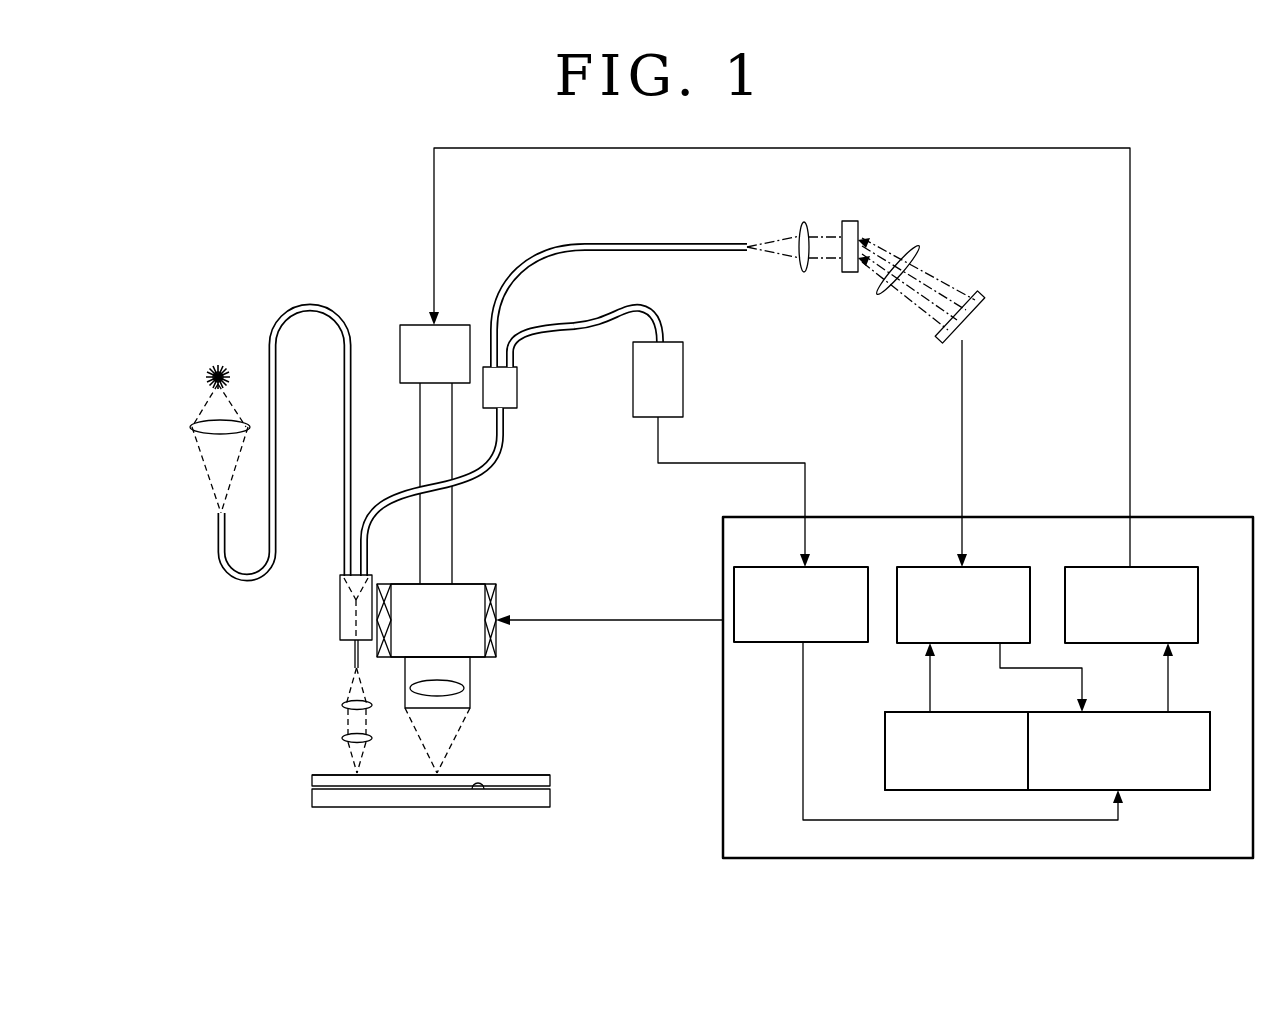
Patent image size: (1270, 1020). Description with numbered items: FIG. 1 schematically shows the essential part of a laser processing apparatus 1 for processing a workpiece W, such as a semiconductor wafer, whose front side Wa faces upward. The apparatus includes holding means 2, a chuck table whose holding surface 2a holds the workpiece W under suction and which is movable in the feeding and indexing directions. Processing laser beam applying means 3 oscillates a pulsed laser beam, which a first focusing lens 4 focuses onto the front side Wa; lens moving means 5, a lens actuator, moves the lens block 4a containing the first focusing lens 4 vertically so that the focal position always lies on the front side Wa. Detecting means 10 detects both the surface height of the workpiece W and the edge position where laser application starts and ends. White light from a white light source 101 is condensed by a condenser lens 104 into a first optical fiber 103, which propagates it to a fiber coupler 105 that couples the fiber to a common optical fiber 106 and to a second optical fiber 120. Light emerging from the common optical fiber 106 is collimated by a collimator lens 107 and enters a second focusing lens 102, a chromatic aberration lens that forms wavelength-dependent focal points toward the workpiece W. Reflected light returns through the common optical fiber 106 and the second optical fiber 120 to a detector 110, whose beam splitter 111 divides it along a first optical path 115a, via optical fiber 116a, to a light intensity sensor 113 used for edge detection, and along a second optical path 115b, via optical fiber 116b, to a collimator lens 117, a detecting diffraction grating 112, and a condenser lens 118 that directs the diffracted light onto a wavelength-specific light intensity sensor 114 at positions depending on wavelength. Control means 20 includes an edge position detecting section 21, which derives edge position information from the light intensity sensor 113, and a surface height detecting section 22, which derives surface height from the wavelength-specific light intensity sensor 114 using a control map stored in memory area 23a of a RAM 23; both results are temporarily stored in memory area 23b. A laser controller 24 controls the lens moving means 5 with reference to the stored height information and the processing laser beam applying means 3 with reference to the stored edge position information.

The laser processing apparatus 1 is at (326, 160).
The holding means 2 is at (550, 798).
The holding surface 2a is at (480, 796).
The processing laser beam applying means 3 is at (458, 325).
The first focusing lens 4 is at (470, 686).
The lens block 4a is at (470, 584).
The lens moving means 5 is at (496, 595).
The detecting means 10 is at (628, 222).
The control means 20 is at (1184, 517).
The edge position detecting section 21 is at (820, 567).
The surface height detecting section 22 is at (978, 567).
The RAM 23 is at (1166, 790).
The memory area 23a is at (948, 712).
The memory area 23b is at (1186, 712).
The laser controller 24 is at (1152, 567).
The white light source 101 is at (218, 368).
The second focusing lens 102 is at (342, 740).
The first optical fiber 103 is at (312, 338).
The condenser lens 104 is at (192, 427).
The fiber coupler 105 is at (340, 592).
The common optical fiber 106 is at (352, 655).
The collimator lens 107 is at (342, 705).
The detector 110 is at (630, 448).
The beam splitter 111 is at (517, 388).
The detecting diffraction grating 112 is at (850, 273).
The light intensity sensor 113 is at (683, 383).
The wavelength-specific light intensity sensor 114 is at (940, 342).
The first optical path 115a is at (600, 318).
The second optical path 115b is at (694, 243).
The optical fiber 116a is at (566, 330).
The optical fiber 116b is at (538, 266).
The collimator lens 117 is at (802, 273).
The condenser lens 118 is at (878, 298).
The second optical fiber 120 is at (388, 508).
The workpiece W is at (550, 782).
The front side Wa is at (532, 775).